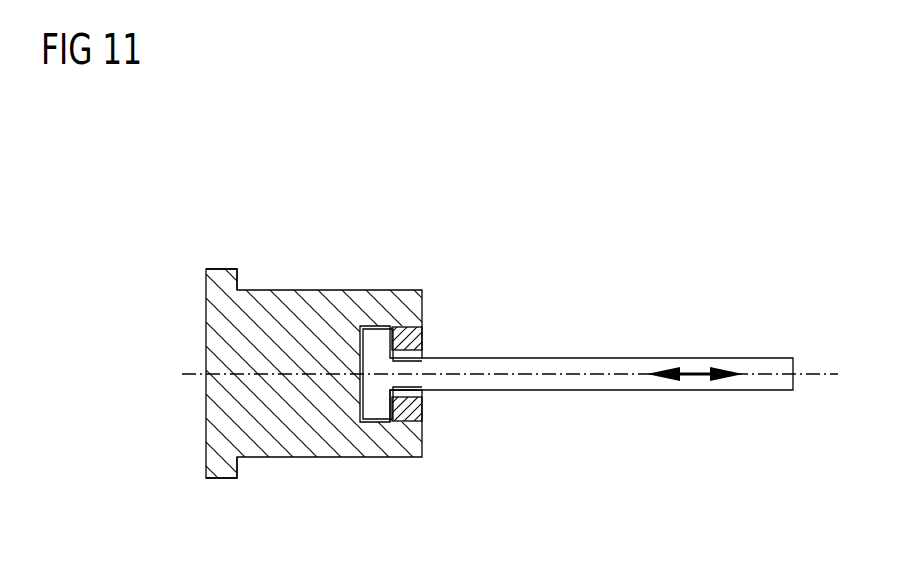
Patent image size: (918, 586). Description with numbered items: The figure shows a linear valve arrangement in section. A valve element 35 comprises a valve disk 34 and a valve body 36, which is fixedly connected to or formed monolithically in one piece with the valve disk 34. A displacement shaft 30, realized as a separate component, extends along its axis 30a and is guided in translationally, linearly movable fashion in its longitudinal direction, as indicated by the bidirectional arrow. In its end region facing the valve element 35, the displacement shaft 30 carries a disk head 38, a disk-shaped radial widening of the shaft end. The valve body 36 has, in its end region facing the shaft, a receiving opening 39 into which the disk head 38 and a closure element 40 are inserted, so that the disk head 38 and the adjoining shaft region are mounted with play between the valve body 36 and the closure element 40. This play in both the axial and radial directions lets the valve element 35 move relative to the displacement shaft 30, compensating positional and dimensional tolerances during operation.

The displacement shaft 30 is at (770, 370).
The rod axis 30a is at (835, 376).
The valve disk 34 is at (218, 282).
The valve element 35 is at (474, 230).
The valve body 36 is at (332, 302).
The disk head 38 is at (375, 410).
The receiving opening 39 is at (418, 403).
The closure element 40 is at (417, 345).